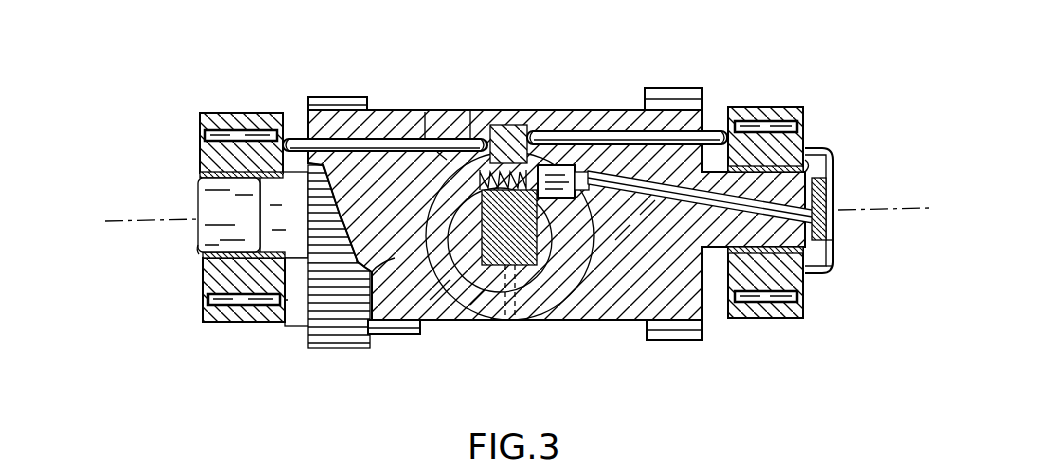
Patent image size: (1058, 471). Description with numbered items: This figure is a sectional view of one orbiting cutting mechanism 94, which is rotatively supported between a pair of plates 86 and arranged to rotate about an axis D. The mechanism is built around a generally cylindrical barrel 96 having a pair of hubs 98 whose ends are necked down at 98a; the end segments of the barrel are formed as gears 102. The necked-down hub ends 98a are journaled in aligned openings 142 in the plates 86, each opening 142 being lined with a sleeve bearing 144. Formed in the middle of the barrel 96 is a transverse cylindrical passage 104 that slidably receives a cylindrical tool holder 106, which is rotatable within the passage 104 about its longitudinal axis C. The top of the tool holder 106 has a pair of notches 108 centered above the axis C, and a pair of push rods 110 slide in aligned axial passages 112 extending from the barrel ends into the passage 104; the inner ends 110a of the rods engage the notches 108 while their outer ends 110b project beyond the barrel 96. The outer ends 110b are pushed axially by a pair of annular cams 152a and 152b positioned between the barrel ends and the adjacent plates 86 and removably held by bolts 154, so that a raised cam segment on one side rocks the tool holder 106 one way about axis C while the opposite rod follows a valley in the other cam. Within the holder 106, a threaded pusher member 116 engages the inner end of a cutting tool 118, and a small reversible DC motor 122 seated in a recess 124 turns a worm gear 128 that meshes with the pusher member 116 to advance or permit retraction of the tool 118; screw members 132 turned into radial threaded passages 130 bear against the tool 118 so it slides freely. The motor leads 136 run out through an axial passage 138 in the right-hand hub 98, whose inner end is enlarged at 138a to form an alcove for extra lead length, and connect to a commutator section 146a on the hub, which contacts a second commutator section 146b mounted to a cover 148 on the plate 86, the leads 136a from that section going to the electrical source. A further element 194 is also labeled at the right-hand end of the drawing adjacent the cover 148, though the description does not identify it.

The orbiting cutting mechanism 94 is at (293, 82).
The barrel 96 is at (450, 110).
The hub 98 is at (283, 178).
The necked-down hub end 98a is at (198, 245).
The gear 102 is at (338, 97).
The transverse cylindrical passage 104 is at (445, 322).
The tool holder 106 is at (490, 321).
The notch 108 is at (508, 125).
The push rod 110 is at (378, 112).
The rod inner end 110a is at (486, 125).
The rod outer end 110b is at (295, 138).
The axial passage 112 is at (420, 86).
The threaded pusher member 116 is at (535, 308).
The cutting tool 118 is at (448, 212).
The reversible DC electric motor 122 is at (556, 165).
The recess 124 is at (440, 152).
The worm gear 128 is at (440, 188).
The radial threaded passage 130 is at (516, 322).
The screw member 132 is at (425, 262).
The motor leads 136 is at (662, 188).
The electrical leads 136a is at (845, 208).
The axial passage 138 is at (650, 206).
The enlarged passage end 138a is at (598, 240).
The opening 142 is at (205, 205).
The sleeve bearing 144 is at (200, 176).
The commutator section 146a is at (834, 270).
The second commutator section 146b is at (834, 250).
The cup or cover 148 is at (848, 175).
The annular cam 152a is at (275, 325).
The annular cam 152b is at (722, 108).
The bolt 154 is at (200, 130).
The retainer 194 is at (826, 150).
The plate 86 is at (228, 113).
The holder longitudinal axis C is at (426, 238).
The barrel rotation axis D is at (120, 225).